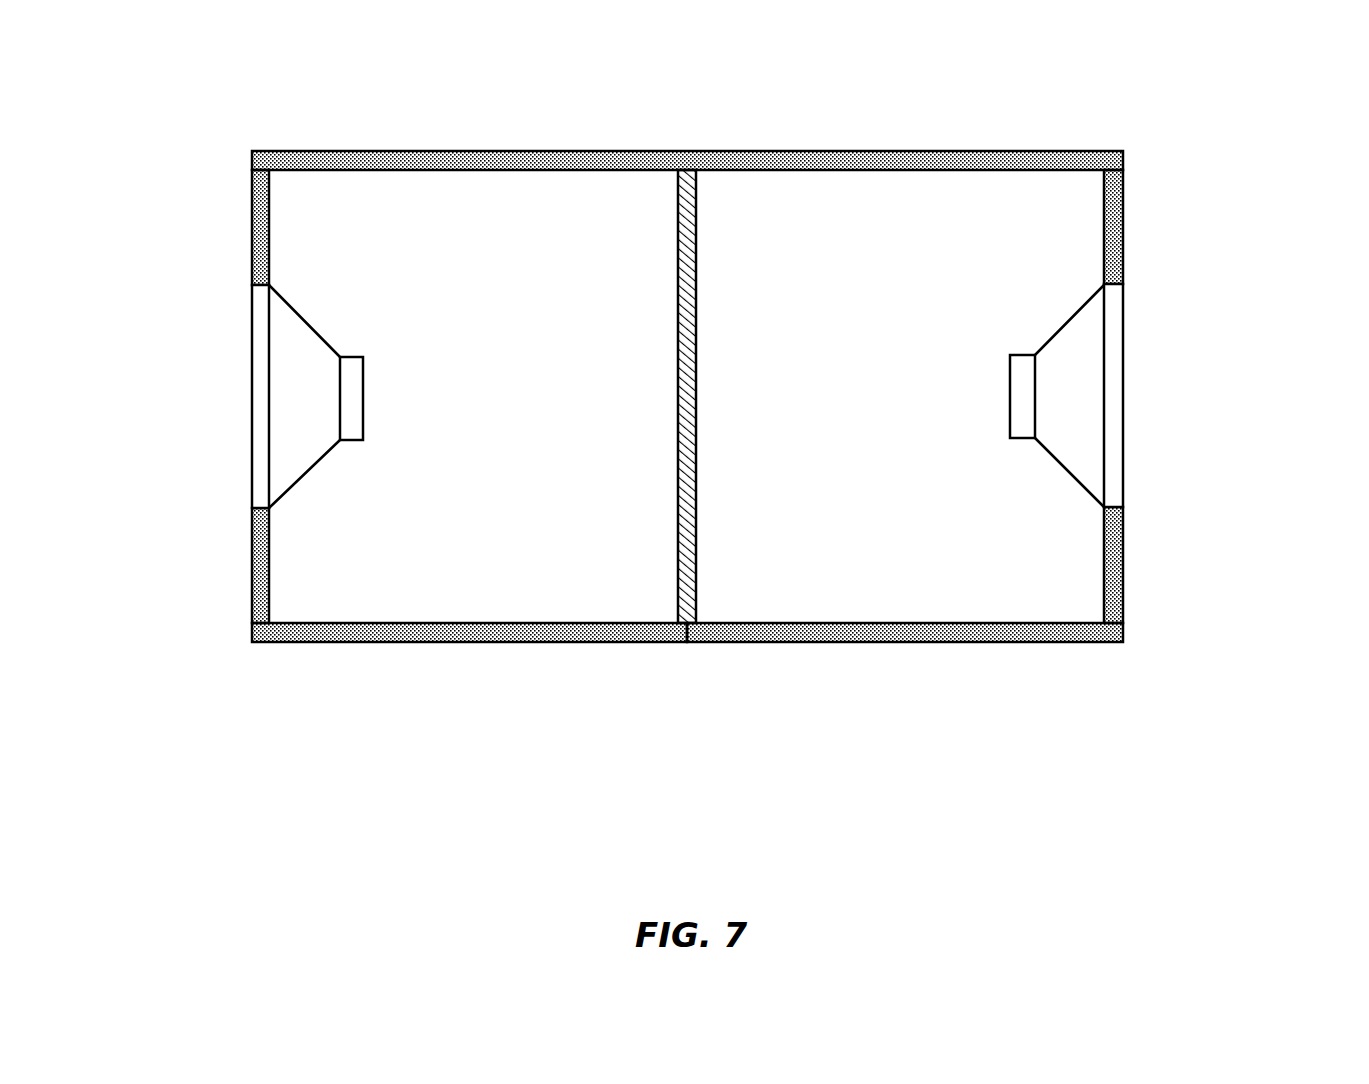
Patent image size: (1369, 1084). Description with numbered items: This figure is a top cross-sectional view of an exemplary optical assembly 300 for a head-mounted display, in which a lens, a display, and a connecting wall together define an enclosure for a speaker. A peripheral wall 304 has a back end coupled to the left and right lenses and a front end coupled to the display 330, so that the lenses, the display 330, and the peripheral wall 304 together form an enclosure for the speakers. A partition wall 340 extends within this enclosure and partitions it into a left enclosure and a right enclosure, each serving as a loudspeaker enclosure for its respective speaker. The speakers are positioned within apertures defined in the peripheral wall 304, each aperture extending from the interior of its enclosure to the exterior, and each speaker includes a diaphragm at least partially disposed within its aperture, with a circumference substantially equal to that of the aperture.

The optical assembly 300 is at (216, 84).
The peripheral wall 304 is at (265, 588).
The display 330 is at (617, 150).
The partition wall 340 is at (697, 249).